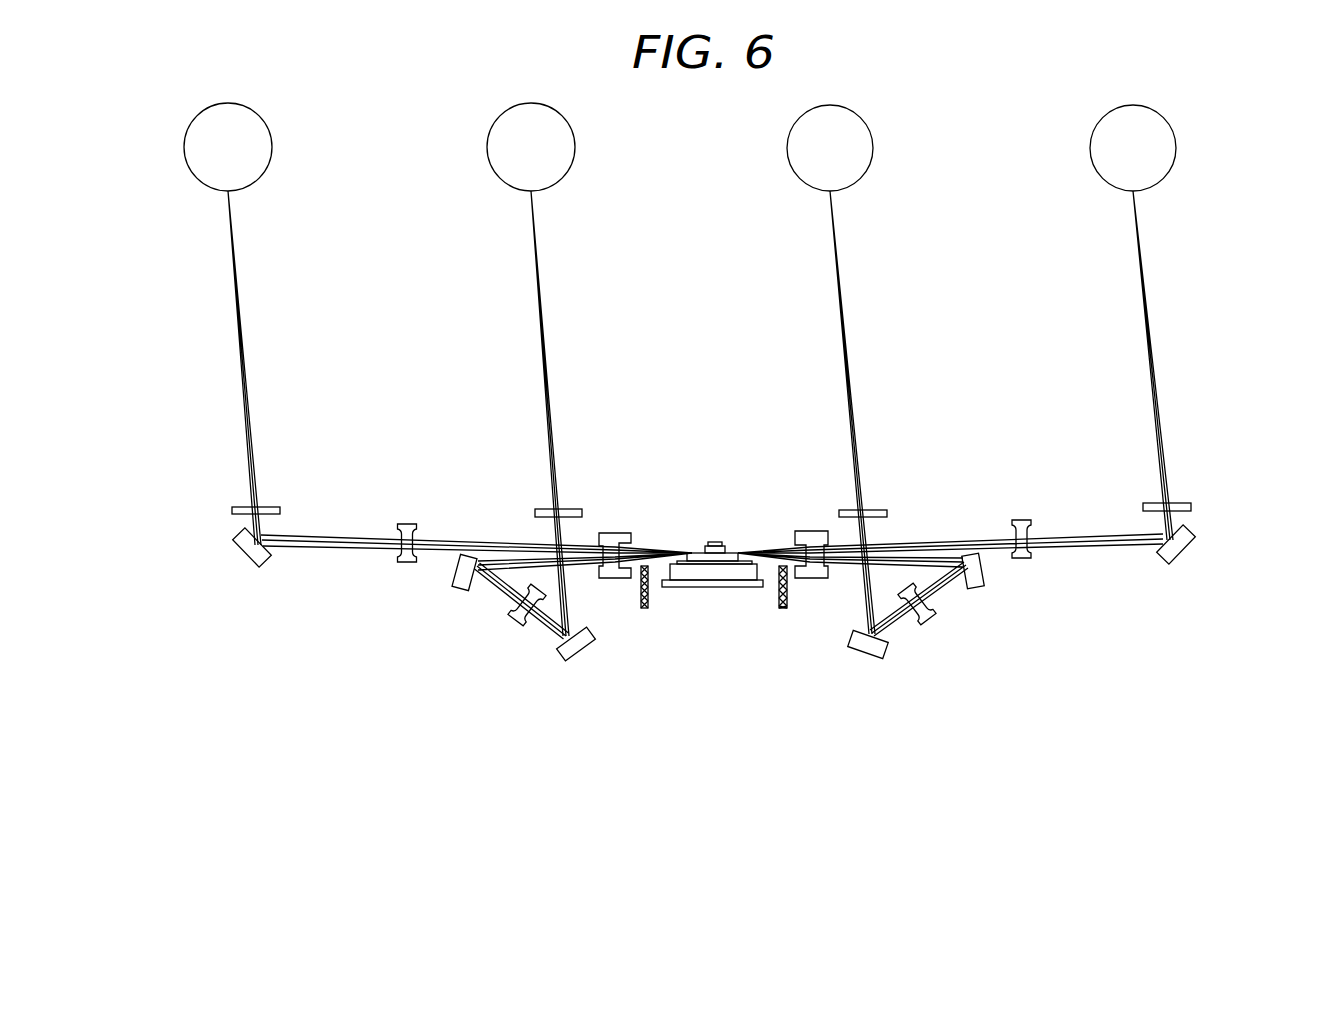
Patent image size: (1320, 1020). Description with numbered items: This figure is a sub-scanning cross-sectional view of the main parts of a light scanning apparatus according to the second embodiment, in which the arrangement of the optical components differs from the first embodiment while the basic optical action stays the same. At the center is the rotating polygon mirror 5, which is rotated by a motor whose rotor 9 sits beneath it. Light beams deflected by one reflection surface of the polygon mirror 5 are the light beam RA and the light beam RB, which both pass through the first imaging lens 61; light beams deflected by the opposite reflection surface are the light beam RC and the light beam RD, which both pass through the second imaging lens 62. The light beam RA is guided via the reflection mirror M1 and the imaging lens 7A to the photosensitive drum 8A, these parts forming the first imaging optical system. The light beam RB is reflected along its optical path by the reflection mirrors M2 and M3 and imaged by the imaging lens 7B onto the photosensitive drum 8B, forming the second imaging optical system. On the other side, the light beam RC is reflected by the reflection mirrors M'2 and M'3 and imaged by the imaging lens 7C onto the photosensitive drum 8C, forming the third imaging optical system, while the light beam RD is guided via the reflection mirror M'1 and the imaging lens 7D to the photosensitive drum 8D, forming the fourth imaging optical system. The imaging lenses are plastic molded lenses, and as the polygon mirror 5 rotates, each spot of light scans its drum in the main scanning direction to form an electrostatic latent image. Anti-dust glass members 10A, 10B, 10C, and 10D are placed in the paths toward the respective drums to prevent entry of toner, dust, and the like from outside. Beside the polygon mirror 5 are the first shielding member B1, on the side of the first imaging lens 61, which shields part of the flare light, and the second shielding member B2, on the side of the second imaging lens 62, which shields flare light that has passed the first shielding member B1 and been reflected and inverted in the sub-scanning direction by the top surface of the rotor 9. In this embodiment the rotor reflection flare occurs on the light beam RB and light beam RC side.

The photosensitive drum 8A is at (208, 190).
The photosensitive drum 8B is at (511, 190).
The photosensitive drum 8C is at (810, 190).
The photosensitive drum 8D is at (1113, 190).
The anti-dust glass member 10A is at (270, 506).
The anti-dust glass member 10B is at (572, 509).
The anti-dust glass member 10C is at (875, 509).
The anti-dust glass member 10D is at (1180, 503).
The imaging lens 7A is at (407, 524).
The imaging lens 7B is at (512, 620).
The imaging lens 7C is at (935, 622).
The imaging lens 7D is at (1021, 520).
The reflection mirror M1 is at (264, 566).
The reflection mirror M2 is at (456, 577).
The reflection mirror M3 is at (560, 650).
The reflection mirror M'1 is at (1203, 551).
The reflection mirror M'2 is at (1008, 574).
The reflection mirror M'3 is at (903, 651).
The light beam RA is at (502, 537).
The light beam RB is at (578, 568).
The light beam RC is at (860, 577).
The light beam RD is at (922, 538).
The first imaging lens 61 is at (615, 534).
The second imaging lens 62 is at (815, 535).
The rotating polygon mirror 5 is at (700, 551).
The rotor 9 is at (717, 578).
The first shielding member B1 is at (645, 612).
The second shielding member B2 is at (783, 612).